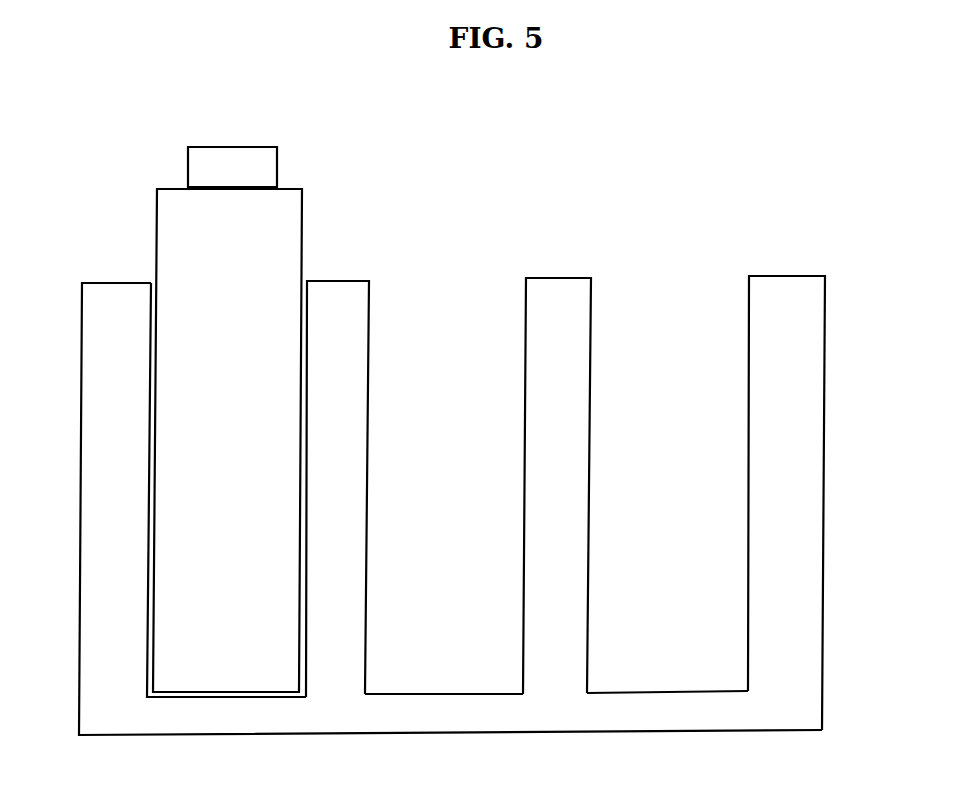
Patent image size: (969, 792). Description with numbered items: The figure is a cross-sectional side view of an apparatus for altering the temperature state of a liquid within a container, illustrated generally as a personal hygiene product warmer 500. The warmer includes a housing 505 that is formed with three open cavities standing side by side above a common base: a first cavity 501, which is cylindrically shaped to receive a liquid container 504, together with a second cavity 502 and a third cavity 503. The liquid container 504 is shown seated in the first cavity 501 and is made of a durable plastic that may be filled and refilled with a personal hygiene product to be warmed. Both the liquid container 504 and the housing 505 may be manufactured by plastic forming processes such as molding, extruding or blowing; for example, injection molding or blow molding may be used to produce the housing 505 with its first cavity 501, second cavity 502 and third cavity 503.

The personal hygiene product warmer 500 is at (100, 257).
The first cavity 501 is at (307, 280).
The second cavity 502 is at (458, 302).
The third cavity 503 is at (652, 300).
The liquid container 504 is at (250, 413).
The housing 505 is at (815, 495).